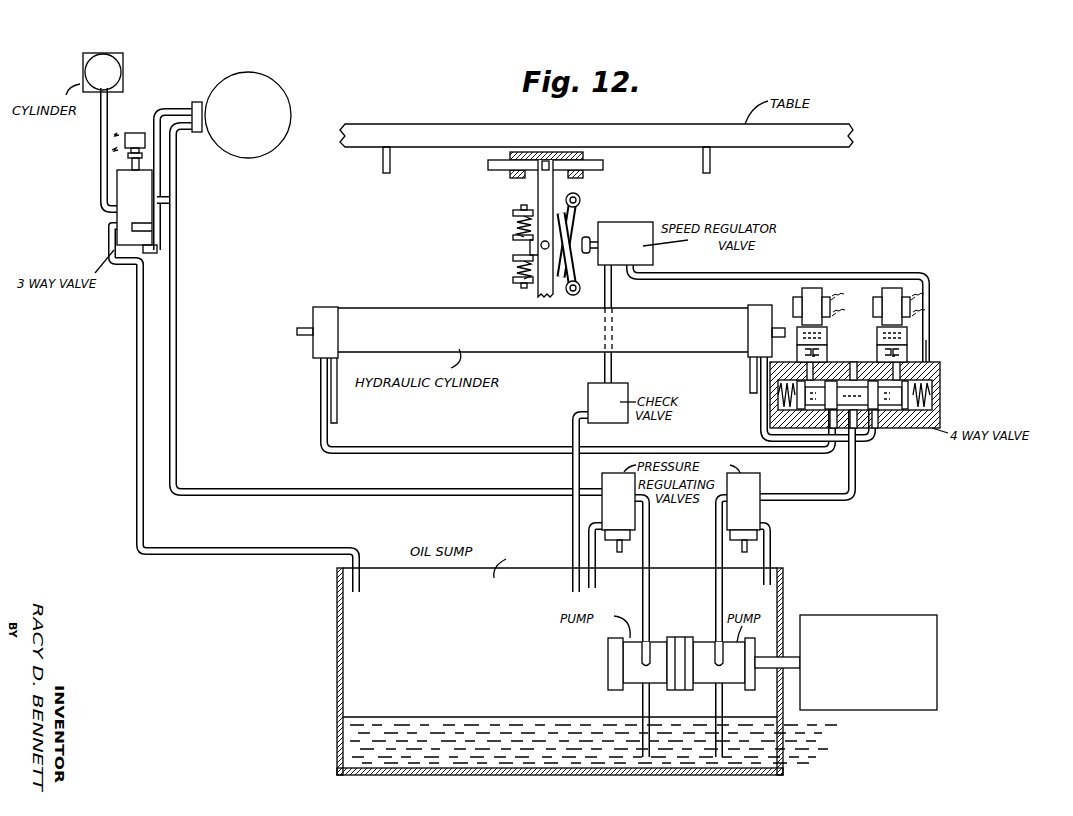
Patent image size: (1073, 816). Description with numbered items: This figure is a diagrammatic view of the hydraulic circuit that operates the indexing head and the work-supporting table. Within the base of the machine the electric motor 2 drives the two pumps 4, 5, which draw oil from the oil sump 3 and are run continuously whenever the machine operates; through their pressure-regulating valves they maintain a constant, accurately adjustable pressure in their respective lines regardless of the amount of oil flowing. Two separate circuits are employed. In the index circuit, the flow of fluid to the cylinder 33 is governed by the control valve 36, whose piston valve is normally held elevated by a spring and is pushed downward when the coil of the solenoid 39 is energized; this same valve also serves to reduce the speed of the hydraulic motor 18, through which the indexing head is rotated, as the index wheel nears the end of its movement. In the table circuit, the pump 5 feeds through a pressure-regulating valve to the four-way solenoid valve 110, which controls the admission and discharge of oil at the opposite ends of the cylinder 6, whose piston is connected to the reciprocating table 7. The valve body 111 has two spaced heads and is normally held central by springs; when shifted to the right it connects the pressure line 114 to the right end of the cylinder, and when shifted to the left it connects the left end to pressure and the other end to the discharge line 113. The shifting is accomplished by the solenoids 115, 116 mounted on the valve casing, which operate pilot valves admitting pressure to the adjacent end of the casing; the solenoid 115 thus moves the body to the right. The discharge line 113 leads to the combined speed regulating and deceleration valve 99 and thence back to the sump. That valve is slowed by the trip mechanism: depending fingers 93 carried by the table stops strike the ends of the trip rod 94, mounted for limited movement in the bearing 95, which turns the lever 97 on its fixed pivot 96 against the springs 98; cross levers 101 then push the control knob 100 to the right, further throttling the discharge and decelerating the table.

The electric motor 2 is at (886, 615).
The oil sump 3 is at (337, 625).
The pump 4 is at (613, 668).
The pump 5 is at (707, 642).
The cylinder 6 is at (486, 297).
The reciprocating table 7 is at (438, 149).
The hydraulic motor 18 is at (277, 82).
The cylinder 33 is at (121, 68).
The control valve 36 is at (122, 209).
The solenoid 39 is at (134, 133).
The depending fingers 93 is at (383, 170).
The trip rod 94 is at (603, 165).
The bearing 95 is at (512, 176).
The fixed pivot 96 is at (549, 243).
The lever 97 is at (538, 189).
The springs 98 is at (512, 235).
The speed regulating and deceleration valve 99 is at (643, 223).
The control knob 100 is at (592, 259).
The cross levers 101 is at (580, 196).
The four-way solenoid valve 110 is at (881, 381).
The valve body 111 is at (940, 383).
The discharge line 113 is at (927, 352).
The pressure line 114 is at (853, 494).
The solenoid 115 is at (811, 289).
The solenoid 116 is at (891, 289).